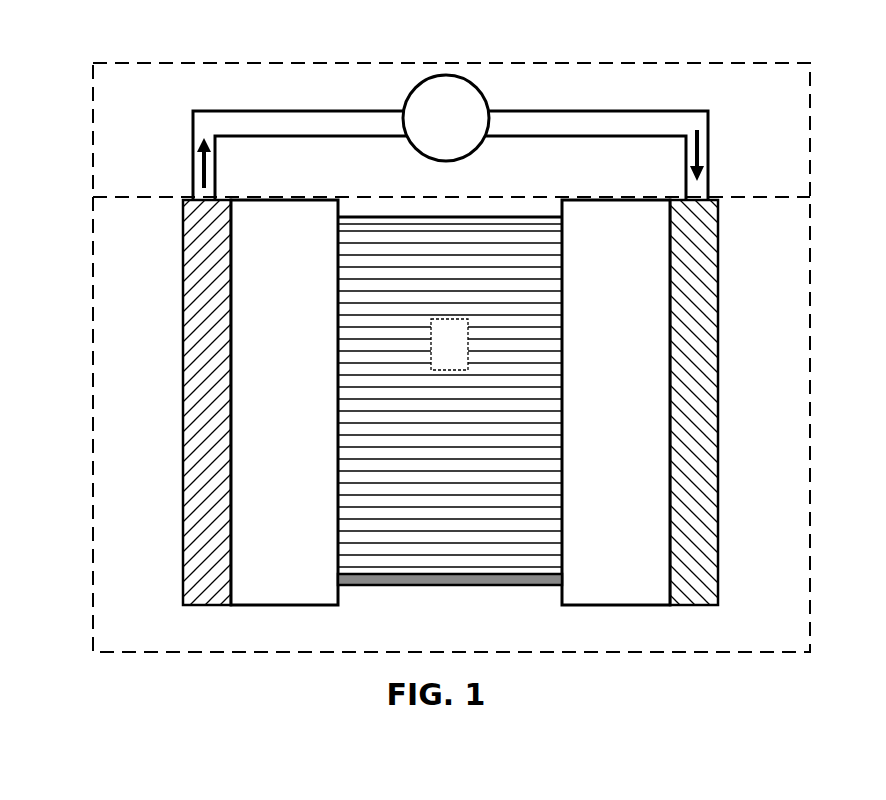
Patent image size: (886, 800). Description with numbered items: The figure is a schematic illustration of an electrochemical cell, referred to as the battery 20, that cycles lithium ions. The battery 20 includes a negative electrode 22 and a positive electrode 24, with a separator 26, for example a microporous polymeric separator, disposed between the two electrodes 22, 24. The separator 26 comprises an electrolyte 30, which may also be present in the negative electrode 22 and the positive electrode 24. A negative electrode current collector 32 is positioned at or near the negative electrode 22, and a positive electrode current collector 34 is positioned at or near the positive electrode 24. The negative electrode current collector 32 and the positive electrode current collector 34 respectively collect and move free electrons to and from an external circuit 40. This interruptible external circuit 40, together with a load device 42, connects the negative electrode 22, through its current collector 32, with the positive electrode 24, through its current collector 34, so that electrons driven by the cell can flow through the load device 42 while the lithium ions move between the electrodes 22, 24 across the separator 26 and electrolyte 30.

The battery 20 is at (68, 300).
The negative electrode 22 is at (274, 351).
The positive electrode 24 is at (603, 351).
The separator 26 is at (457, 587).
The electrolyte 30 is at (461, 355).
The negative electrode current collector 32 is at (183, 290).
The positive electrode current collector 34 is at (718, 281).
The external circuit 40 is at (151, 60).
The load device 42 is at (433, 131).